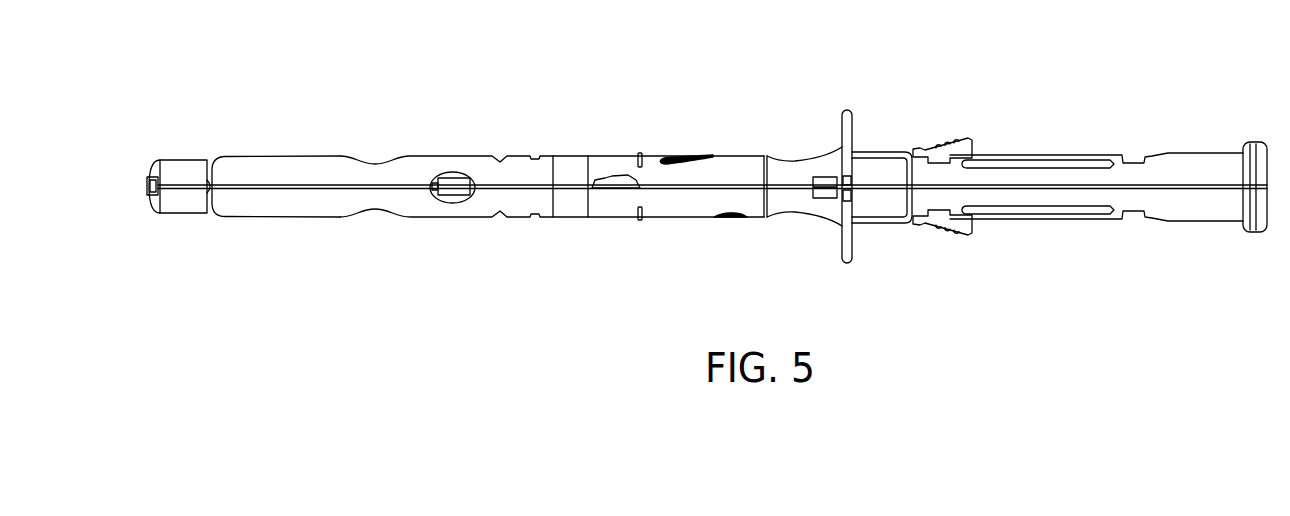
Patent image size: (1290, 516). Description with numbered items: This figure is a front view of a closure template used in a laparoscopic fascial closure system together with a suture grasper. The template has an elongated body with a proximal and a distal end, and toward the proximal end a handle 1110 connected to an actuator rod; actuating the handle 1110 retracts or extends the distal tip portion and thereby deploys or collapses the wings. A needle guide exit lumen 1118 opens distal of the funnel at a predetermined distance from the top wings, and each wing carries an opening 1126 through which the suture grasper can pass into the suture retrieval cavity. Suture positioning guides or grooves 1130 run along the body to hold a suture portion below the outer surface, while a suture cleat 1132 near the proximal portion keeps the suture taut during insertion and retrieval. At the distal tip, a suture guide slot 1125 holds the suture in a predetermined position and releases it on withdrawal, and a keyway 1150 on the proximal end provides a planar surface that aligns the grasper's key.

The handle 1110 is at (963, 142).
The needle guide exit lumen 1118 is at (621, 176).
The suture guide slot 1125 is at (181, 189).
The opening 1126 is at (452, 203).
The suture positioning guides or grooves 1130 is at (715, 187).
The suture cleat 1132 is at (823, 198).
The keyway 1150 is at (880, 175).